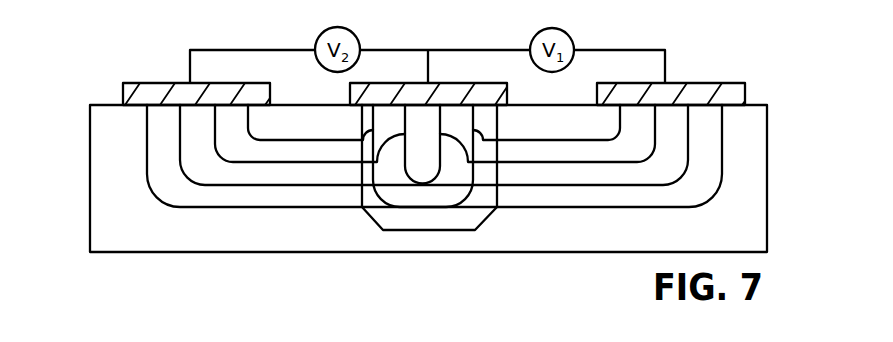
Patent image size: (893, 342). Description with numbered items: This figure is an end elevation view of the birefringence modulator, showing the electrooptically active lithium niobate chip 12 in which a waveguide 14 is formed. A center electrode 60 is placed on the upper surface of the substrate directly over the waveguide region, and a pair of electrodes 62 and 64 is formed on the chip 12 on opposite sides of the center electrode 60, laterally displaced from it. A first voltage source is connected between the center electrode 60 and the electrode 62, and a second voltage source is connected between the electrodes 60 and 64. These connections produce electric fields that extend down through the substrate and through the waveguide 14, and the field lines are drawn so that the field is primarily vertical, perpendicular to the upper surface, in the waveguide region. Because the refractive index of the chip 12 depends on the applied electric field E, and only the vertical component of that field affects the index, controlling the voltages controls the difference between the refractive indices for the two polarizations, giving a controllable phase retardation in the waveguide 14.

The lithium niobate chip 12 is at (170, 253).
The waveguide 14 is at (408, 230).
The center electrode 60 is at (450, 82).
The electrode 62 is at (687, 82).
The electrode 64 is at (168, 83).
The applied electric field E is at (754, 158).